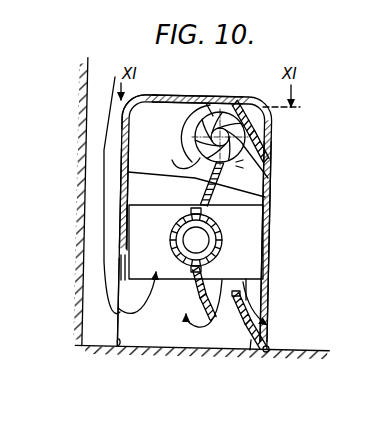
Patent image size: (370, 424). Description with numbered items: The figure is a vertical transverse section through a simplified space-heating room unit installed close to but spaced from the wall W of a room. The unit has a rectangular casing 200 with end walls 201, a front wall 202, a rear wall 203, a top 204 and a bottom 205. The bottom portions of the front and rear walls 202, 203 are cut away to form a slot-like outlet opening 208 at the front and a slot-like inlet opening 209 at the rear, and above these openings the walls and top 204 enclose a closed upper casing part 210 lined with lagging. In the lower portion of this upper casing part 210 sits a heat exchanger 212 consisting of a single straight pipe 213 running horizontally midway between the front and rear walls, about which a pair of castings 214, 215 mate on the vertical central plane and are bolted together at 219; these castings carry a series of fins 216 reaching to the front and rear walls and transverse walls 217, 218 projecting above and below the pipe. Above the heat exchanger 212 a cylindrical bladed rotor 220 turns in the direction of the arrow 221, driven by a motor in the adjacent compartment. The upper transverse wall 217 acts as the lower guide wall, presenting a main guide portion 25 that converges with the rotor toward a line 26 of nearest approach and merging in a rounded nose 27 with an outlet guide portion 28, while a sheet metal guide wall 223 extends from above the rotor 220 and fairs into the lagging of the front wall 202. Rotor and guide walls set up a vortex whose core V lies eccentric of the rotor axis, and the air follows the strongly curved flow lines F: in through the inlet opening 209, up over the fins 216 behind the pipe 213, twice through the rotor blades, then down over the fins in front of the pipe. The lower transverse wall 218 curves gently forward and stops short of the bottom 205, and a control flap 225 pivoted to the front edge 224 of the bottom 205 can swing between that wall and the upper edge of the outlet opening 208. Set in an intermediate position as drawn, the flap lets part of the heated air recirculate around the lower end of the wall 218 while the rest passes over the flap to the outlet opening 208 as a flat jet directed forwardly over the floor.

The casing 200 is at (279, 126).
The end wall 201 is at (116, 350).
The front wall 202 is at (272, 206).
The rear wall 203 is at (121, 209).
The top 204 is at (178, 96).
The bottom 205 is at (170, 350).
The outlet opening 208 is at (272, 325).
The inlet opening 209 is at (128, 316).
The closed upper casing part 210 is at (121, 119).
The heat exchanger 212 is at (207, 244).
The pipe 213 is at (256, 273).
The casting 214 is at (224, 232).
The casting 215 is at (119, 240).
The fins 216 is at (133, 266).
The transverse wall 217 is at (128, 172).
The transverse wall 218 is at (213, 352).
The bolts 219 is at (181, 211).
The cylindrical bladed rotor 220 is at (259, 152).
The arrow 221 is at (210, 104).
The sheet metal guide wall 223 is at (245, 103).
The front edge 224 is at (269, 350).
The control flap 225 is at (250, 350).
The line of nearest approach 26 is at (196, 138).
The rounded nose 27 is at (270, 197).
The outlet guide portion 28 is at (201, 199).
The main guide portion 25 is at (183, 166).
The vortex core V is at (203, 146).
The flow lines F is at (248, 165).
The wall W is at (93, 197).